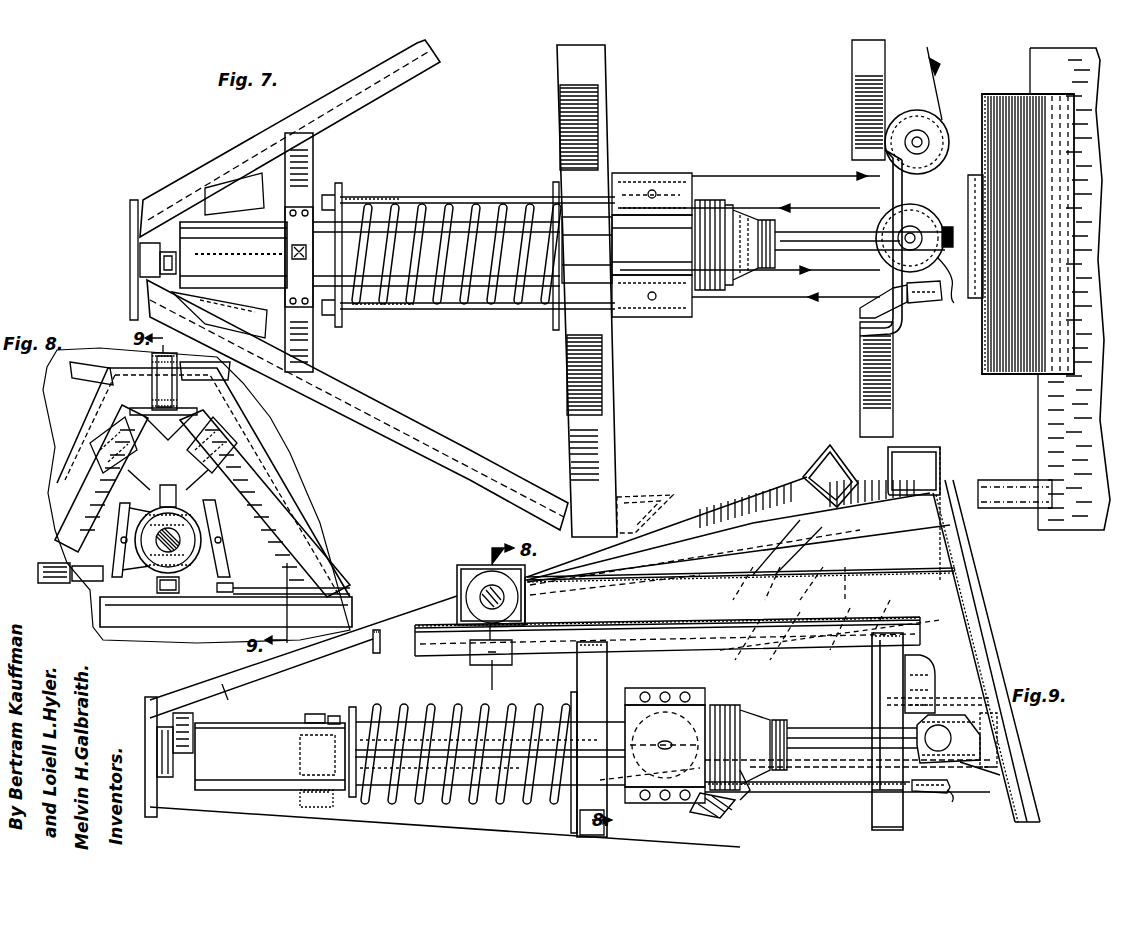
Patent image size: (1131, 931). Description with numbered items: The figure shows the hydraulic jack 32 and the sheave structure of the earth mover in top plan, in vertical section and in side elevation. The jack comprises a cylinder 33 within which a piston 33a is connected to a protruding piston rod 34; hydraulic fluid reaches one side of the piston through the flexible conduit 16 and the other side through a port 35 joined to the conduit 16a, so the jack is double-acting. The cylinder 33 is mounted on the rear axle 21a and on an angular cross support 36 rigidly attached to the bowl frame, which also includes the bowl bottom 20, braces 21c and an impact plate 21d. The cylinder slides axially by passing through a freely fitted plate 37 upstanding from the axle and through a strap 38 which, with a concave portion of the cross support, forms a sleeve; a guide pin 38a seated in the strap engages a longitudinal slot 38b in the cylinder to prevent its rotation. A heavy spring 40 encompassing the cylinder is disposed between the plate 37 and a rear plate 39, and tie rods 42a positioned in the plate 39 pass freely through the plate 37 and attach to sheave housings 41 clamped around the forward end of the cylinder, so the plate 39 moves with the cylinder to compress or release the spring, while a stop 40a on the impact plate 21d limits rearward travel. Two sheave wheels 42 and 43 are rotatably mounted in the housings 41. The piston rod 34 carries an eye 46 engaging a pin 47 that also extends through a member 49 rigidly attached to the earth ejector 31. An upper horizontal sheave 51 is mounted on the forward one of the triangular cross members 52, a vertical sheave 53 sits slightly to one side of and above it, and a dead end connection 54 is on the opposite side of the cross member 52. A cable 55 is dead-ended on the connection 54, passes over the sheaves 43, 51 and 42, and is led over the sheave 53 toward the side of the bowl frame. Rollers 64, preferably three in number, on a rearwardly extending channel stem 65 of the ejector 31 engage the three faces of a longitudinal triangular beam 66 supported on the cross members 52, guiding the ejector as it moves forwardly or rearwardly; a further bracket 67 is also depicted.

In FIG. 7, the flexible conduit 16 is at (160, 262).
In FIG. 9, the flexible conduit 16 is at (198, 722).
In FIG. 9, the flexible conduit 16a is at (752, 800).
In FIG. 7, the bowl bottom 20 is at (1045, 418).
In FIG. 7, the rear axle 21a is at (598, 66).
In FIG. 9, the rear axle 21a is at (573, 818).
In FIG. 7, the brace 21c is at (372, 90).
In FIG. 9, the brace 21c is at (805, 482).
In FIG. 7, the impact plate 21d is at (130, 222).
In FIG. 9, the impact plate 21d is at (145, 700).
In FIG. 7, the earth ejector 31 is at (985, 345).
In FIG. 9, the earth ejector 31 is at (990, 662).
In FIG. 7, the hydraulic jack 32 is at (410, 205).
In FIG. 9, the hydraulic jack 32 is at (420, 710).
In FIG. 7, the cylinder 33 is at (220, 240).
In FIG. 8, the cylinder 33 is at (164, 548).
In FIG. 9, the cylinder 33 is at (282, 730).
In FIG. 9, the piston 33a is at (292, 757).
In FIG. 7, the piston rod 34 is at (805, 238).
In FIG. 9, the piston rod 34 is at (450, 720).
In FIG. 7, the port 35 is at (770, 295).
In FIG. 9, the port 35 is at (765, 780).
In FIG. 7, the angular cross support 36 is at (305, 172).
In FIG. 9, the angular cross support 36 is at (300, 798).
In FIG. 7, the plate 37 is at (555, 185).
In FIG. 9, the plate 37 is at (572, 705).
In FIG. 7, the strap 38 is at (300, 257).
In FIG. 9, the strap 38 is at (341, 702).
In FIG. 7, the guide pin 38a is at (290, 262).
In FIG. 9, the guide pin 38a is at (312, 714).
In FIG. 7, the longitudinal slot 38b is at (215, 256).
In FIG. 7, the plate 39 is at (340, 190).
In FIG. 9, the plate 39 is at (362, 739).
In FIG. 7, the spring 40 is at (425, 300).
In FIG. 9, the spring 40 is at (500, 800).
In FIG. 7, the stop 40a is at (140, 252).
In FIG. 9, the stop 40a is at (165, 727).
In FIG. 7, the sheave housing 41 is at (617, 233).
In FIG. 8, the sheave housing 41 is at (118, 497).
In FIG. 9, the sheave housing 41 is at (627, 720).
In FIG. 7, the sheave wheel 42 is at (648, 178).
In FIG. 8, the sheave wheel 42 is at (122, 524).
In FIG. 7, the tie rod 42a is at (478, 196).
In FIG. 8, the tie rod 42a is at (125, 546).
In FIG. 9, the tie rod 42a is at (405, 780).
In FIG. 7, the sheave wheel 43 is at (634, 308).
In FIG. 8, the sheave wheel 43 is at (218, 530).
In FIG. 9, the sheave wheel 43 is at (715, 805).
In FIG. 7, the eye 46 is at (948, 228).
In FIG. 9, the eye 46 is at (980, 774).
In FIG. 7, the pin 47 is at (953, 286).
In FIG. 9, the pin 47 is at (945, 732).
In FIG. 7, the member 49 is at (968, 226).
In FIG. 9, the member 49 is at (985, 740).
In FIG. 7, the upper horizontally disposed sheave 51 is at (917, 212).
In FIG. 8, the upper horizontally disposed sheave 51 is at (160, 505).
In FIG. 9, the upper horizontally disposed sheave 51 is at (940, 700).
In FIG. 7, the triangular cross member 52 is at (598, 117).
In FIG. 8, the triangular cross member 52 is at (90, 500).
In FIG. 9, the triangular cross member 52 is at (592, 700).
In FIG. 7, the vertical sheave 53 is at (935, 150).
In FIG. 8, the vertical sheave 53 is at (48, 563).
In FIG. 9, the vertical sheave 53 is at (880, 762).
In FIG. 7, the dead end connection 54 is at (925, 305).
In FIG. 8, the dead end connection 54 is at (180, 595).
In FIG. 9, the dead end connection 54 is at (934, 800).
In FIG. 7, the cable 55 is at (760, 190).
In FIG. 8, the cable 55 is at (235, 585).
In FIG. 9, the cable 55 is at (862, 782).
In FIG. 8, the roller 64 is at (155, 385).
In FIG. 9, the roller 64 is at (482, 575).
In FIG. 8, the channel stem 65 is at (250, 395).
In FIG. 9, the channel stem 65 is at (740, 596).
In FIG. 8, the triangular beam 66 is at (203, 482).
In FIG. 9, the triangular beam 66 is at (610, 618).
In FIG. 9, the bracket 67 is at (912, 450).